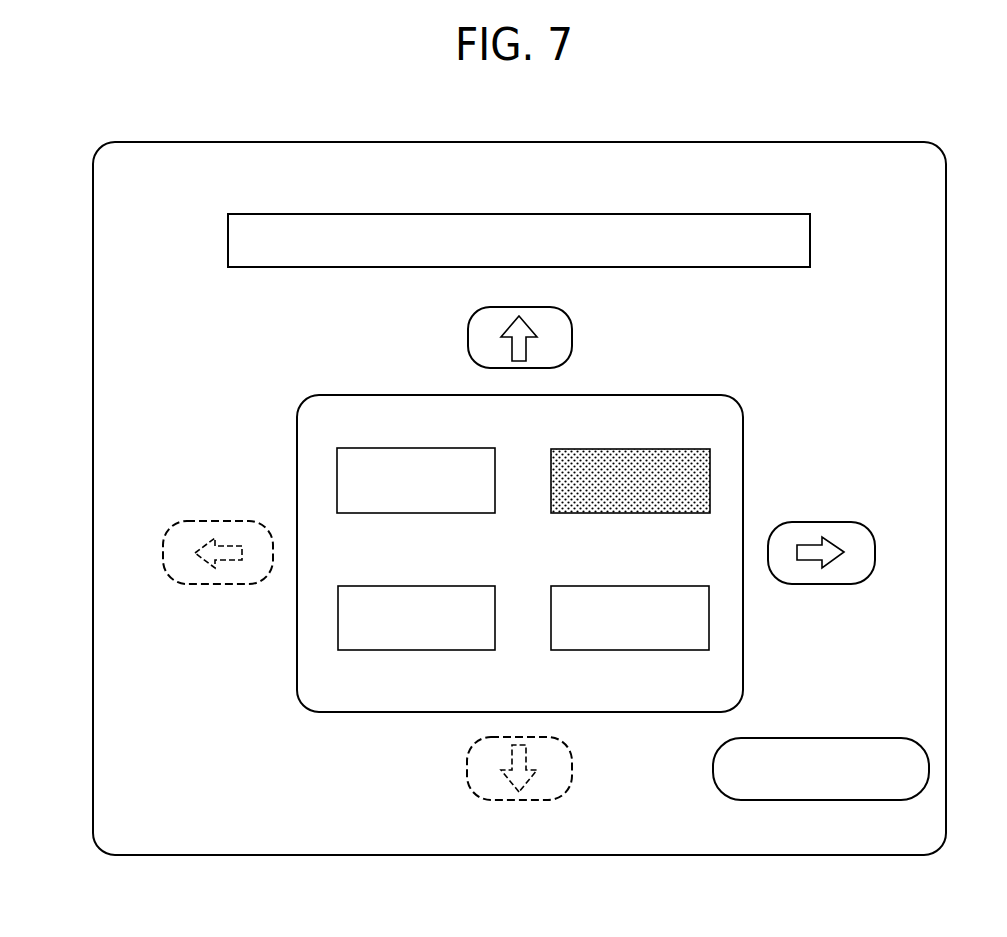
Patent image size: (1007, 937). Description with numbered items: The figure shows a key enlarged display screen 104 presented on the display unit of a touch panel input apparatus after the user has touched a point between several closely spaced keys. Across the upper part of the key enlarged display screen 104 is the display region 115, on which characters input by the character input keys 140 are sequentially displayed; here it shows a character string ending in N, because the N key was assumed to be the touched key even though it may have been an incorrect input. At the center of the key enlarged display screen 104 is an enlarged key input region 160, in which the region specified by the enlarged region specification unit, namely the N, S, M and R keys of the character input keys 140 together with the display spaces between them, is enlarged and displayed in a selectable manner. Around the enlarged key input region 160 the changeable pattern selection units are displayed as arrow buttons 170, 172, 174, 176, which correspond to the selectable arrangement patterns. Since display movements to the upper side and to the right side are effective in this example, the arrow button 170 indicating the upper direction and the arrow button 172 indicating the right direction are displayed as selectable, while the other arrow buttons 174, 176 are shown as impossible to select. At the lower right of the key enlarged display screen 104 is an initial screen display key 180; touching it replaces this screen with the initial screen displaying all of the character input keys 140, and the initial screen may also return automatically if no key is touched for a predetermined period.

The key enlarged display screen 104 is at (817, 141).
The display region 115 is at (726, 214).
The character input keys 140 is at (335, 435).
The enlarged key input region 160 is at (667, 395).
The arrow button 170 is at (468, 338).
The arrow button 172 is at (825, 522).
The arrow button 174 is at (467, 768).
The arrow button 176 is at (207, 521).
The initial screen display key 180 is at (846, 738).